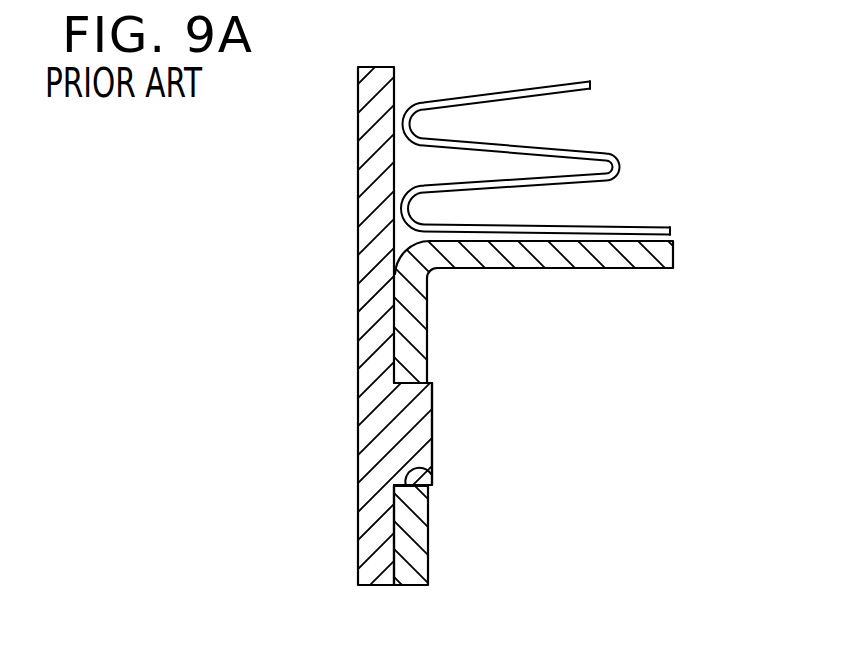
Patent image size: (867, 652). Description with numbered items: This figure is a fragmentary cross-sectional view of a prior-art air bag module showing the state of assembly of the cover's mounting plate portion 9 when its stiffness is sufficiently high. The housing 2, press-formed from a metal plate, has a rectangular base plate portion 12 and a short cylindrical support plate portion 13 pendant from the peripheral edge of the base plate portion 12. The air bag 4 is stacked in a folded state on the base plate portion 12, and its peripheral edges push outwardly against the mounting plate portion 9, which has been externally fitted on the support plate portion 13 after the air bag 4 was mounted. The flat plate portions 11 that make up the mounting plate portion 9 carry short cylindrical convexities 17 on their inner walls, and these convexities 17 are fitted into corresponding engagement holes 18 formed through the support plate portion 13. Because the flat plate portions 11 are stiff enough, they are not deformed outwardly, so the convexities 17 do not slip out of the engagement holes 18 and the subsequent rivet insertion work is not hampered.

The mounting plate portion 9 is at (358, 97).
The flat plate portions 11 is at (360, 170).
The air bag 4 is at (523, 82).
The base plate portion 12 is at (676, 253).
The housing 2 is at (554, 267).
The short cylindrical convexities 17 is at (418, 403).
The engagement holes 18 is at (418, 463).
The support plate portion 13 is at (420, 533).